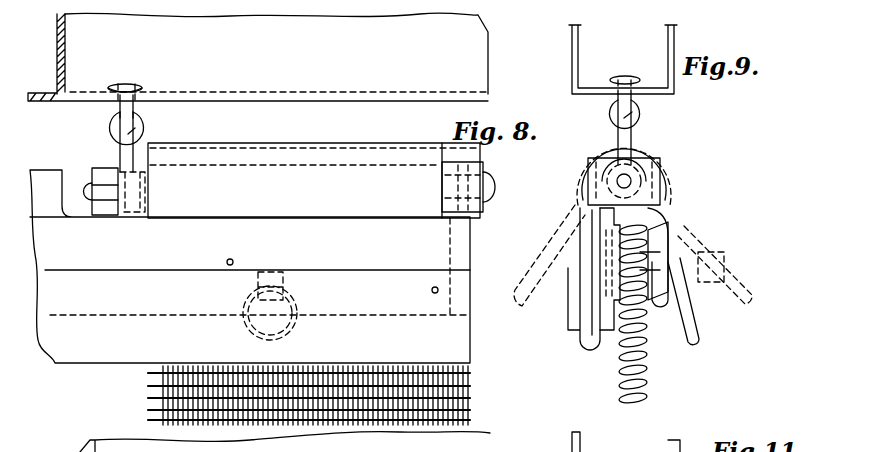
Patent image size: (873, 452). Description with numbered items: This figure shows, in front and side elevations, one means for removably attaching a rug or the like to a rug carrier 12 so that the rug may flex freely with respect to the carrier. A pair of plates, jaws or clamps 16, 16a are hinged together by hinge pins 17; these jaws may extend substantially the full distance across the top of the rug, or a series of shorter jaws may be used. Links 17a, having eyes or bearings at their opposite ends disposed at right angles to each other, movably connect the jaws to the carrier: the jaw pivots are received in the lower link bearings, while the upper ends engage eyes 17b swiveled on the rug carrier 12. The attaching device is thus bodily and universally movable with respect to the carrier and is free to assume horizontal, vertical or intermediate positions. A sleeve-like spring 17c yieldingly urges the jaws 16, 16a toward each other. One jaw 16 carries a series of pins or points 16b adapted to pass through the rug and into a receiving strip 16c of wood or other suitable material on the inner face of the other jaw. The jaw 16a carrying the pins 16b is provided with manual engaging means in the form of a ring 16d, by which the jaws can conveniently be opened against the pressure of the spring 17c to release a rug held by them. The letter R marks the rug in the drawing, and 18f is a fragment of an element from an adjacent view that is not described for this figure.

In FIG. 8, the rug carrier 12 is at (472, 56).
In FIG. 9, the rug carrier 12 is at (572, 43).
In FIG. 8, the hinge pins 17 is at (92, 190).
In FIG. 9, the hinge pins 17 is at (633, 183).
In FIG. 8, the links 17a is at (121, 144).
In FIG. 9, the links 17a is at (641, 136).
In FIG. 8, the eyes 17b is at (136, 103).
In FIG. 9, the eyes 17b is at (614, 98).
In FIG. 8, the sleeve-like spring 17c is at (300, 143).
In FIG. 9, the sleeve-like spring 17c is at (655, 153).
In FIG. 8, the jaw 16 is at (124, 352).
In FIG. 9, the jaw 16 is at (523, 268).
In FIG. 8, the jaw 16a is at (297, 302).
In FIG. 9, the jaw 16a is at (642, 250).
In FIG. 9, the pins or points 16b is at (728, 268).
In FIG. 9, the receiving strip 16c is at (608, 256).
In FIG. 9, the ring 16d is at (700, 322).
In FIG. 8, the spring / mesh R is at (470, 384).
In FIG. 9, the spring / mesh R is at (620, 373).
In FIG. 9, the fragment element 18f is at (659, 443).